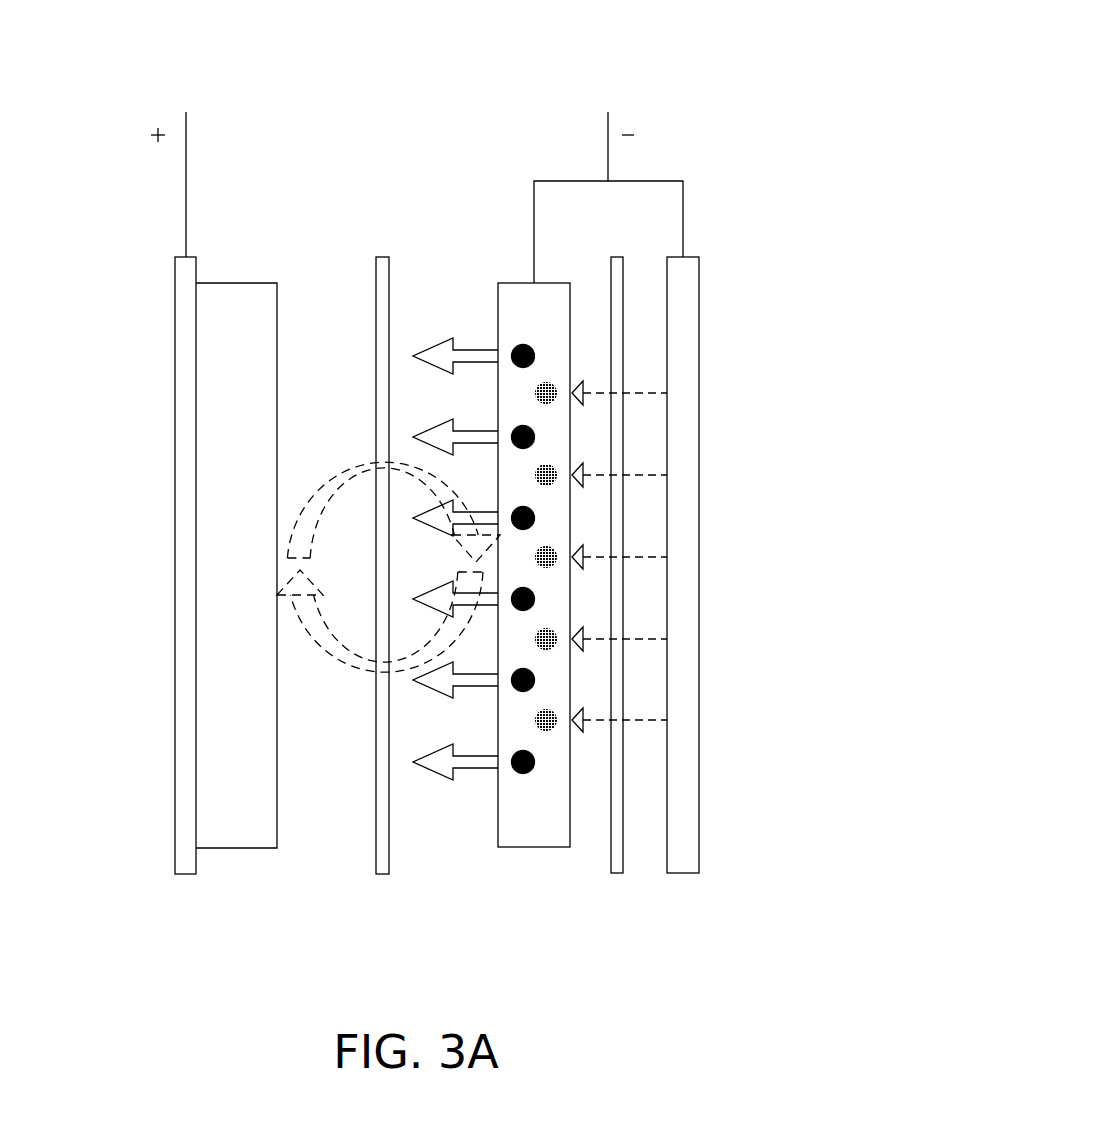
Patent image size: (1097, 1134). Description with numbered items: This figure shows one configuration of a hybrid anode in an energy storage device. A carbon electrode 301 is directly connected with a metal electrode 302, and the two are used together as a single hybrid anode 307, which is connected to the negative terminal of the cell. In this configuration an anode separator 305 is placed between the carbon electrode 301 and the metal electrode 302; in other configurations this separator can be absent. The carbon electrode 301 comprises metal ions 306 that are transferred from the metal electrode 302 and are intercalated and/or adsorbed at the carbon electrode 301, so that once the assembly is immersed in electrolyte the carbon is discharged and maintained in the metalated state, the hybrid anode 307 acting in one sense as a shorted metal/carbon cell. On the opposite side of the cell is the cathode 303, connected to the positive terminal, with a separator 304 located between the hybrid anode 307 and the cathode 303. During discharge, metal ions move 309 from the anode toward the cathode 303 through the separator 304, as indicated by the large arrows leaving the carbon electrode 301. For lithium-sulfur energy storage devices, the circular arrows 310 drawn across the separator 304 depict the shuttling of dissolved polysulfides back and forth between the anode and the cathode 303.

The carbon electrode 301 is at (535, 848).
The metal electrode 302 is at (683, 874).
The cathode 303 is at (263, 158).
The separator 304 is at (382, 257).
The anode separator 305 is at (616, 874).
The metal ions 306 is at (518, 770).
The hybrid anode 307 is at (671, 85).
The movement of metal ions 309 is at (468, 348).
The circular arrows 310 is at (348, 466).